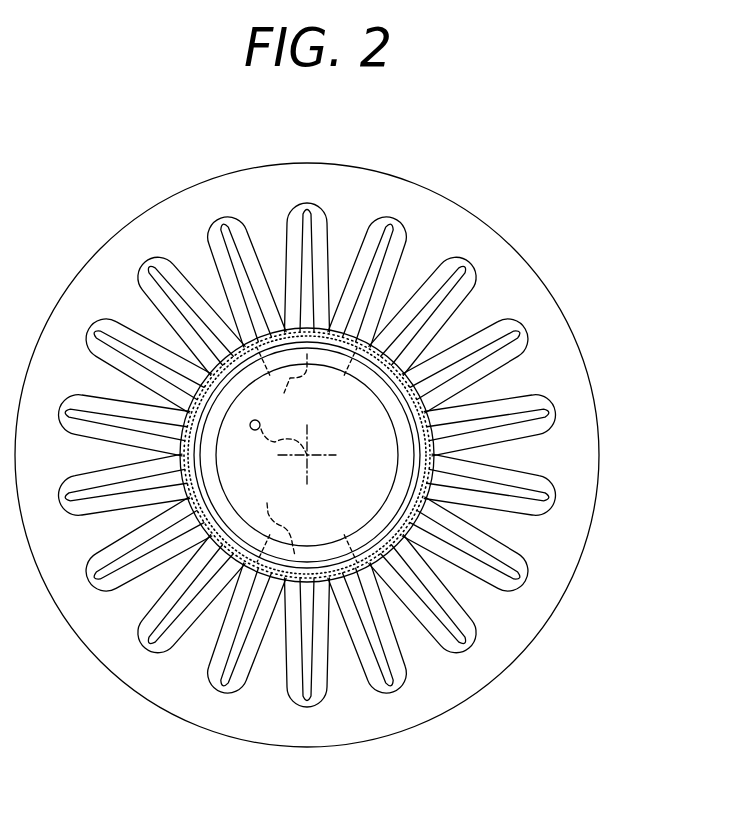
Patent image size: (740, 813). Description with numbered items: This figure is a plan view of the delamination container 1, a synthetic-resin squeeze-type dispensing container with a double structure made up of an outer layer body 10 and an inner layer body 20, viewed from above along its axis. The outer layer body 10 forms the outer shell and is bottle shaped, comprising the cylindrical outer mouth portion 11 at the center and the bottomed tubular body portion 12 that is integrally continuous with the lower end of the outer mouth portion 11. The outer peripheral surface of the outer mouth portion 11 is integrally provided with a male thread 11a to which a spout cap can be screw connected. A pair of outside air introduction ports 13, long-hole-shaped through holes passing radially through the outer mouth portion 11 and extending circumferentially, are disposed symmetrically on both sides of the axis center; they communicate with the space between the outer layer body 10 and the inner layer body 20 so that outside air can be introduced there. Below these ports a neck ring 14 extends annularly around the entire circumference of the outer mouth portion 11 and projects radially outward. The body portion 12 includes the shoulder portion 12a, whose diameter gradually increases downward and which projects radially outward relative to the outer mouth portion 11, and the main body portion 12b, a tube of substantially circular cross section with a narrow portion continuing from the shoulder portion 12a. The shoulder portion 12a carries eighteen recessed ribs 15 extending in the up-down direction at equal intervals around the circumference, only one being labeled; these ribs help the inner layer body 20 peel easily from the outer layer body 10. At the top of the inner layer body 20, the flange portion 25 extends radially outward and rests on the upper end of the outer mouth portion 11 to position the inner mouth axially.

The delamination container 1 is at (577, 208).
The outer layer body 10 is at (447, 197).
The outer mouth portion 11 is at (370, 345).
The male thread 11a is at (222, 545).
The body portion 12 is at (598, 445).
The shoulder portion 12a is at (517, 377).
The main body portion 12b is at (527, 645).
The outside air introduction ports 13 is at (278, 455).
The neck ring 14 is at (187, 517).
The recessed rib 15 is at (372, 670).
The inner layer body 20 is at (358, 378).
The flange portion 25 is at (390, 500).